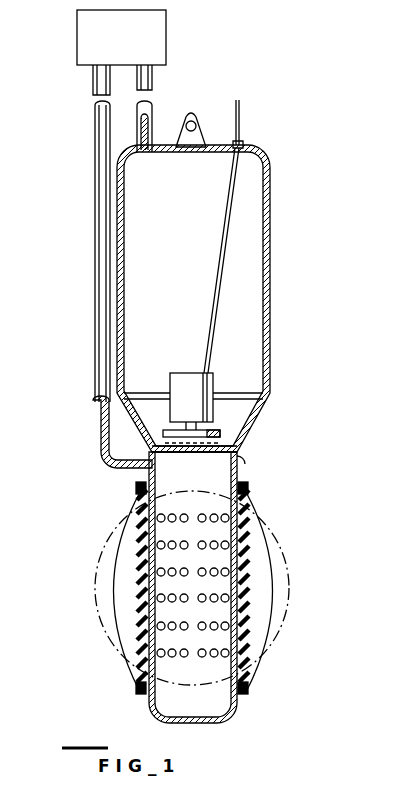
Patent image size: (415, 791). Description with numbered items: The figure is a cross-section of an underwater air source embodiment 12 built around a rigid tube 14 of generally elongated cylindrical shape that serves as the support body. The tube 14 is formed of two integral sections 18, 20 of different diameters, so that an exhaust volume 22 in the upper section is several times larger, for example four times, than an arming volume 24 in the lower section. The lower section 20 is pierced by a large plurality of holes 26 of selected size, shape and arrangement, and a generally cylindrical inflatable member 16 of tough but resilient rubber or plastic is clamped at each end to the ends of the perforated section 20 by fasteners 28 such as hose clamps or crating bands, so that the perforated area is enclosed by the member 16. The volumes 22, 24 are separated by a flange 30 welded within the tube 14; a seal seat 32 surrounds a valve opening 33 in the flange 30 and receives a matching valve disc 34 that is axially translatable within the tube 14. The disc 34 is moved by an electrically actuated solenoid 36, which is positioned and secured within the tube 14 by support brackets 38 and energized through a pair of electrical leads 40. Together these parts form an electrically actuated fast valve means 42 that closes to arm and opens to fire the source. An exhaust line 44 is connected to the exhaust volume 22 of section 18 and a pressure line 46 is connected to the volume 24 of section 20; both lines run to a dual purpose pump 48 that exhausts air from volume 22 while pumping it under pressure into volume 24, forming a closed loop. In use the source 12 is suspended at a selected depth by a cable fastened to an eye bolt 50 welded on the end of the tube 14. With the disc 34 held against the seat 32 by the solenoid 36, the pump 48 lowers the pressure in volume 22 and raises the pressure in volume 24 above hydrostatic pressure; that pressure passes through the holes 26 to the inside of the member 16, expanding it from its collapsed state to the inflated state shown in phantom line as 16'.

The embodiment of the invention 12 is at (187, 366).
The rigid tube 14 is at (223, 298).
The inflatable member 16 is at (170, 590).
The inflated state of the inflatable member 16' is at (163, 588).
The first tube section 18 is at (266, 277).
The perforated tube section 20 is at (231, 587).
The exhaust volume 22 is at (197, 273).
The arming volume 24 is at (208, 688).
The holes 26 is at (216, 596).
The fasteners 28 is at (248, 490).
The flange 30 is at (241, 464).
The seal seat 32 is at (238, 446).
The valve opening 33 is at (178, 455).
The valve disc 34 is at (208, 434).
The solenoid 36 is at (207, 378).
The support brackets 38 is at (146, 393).
The electrical leads 40 is at (219, 218).
The fast valve means 42 is at (100, 419).
The exhaust line 44 is at (153, 112).
The pressure line 46 is at (100, 299).
The dual purpose pump 48 is at (167, 35).
The eye bolt 50 is at (200, 120).